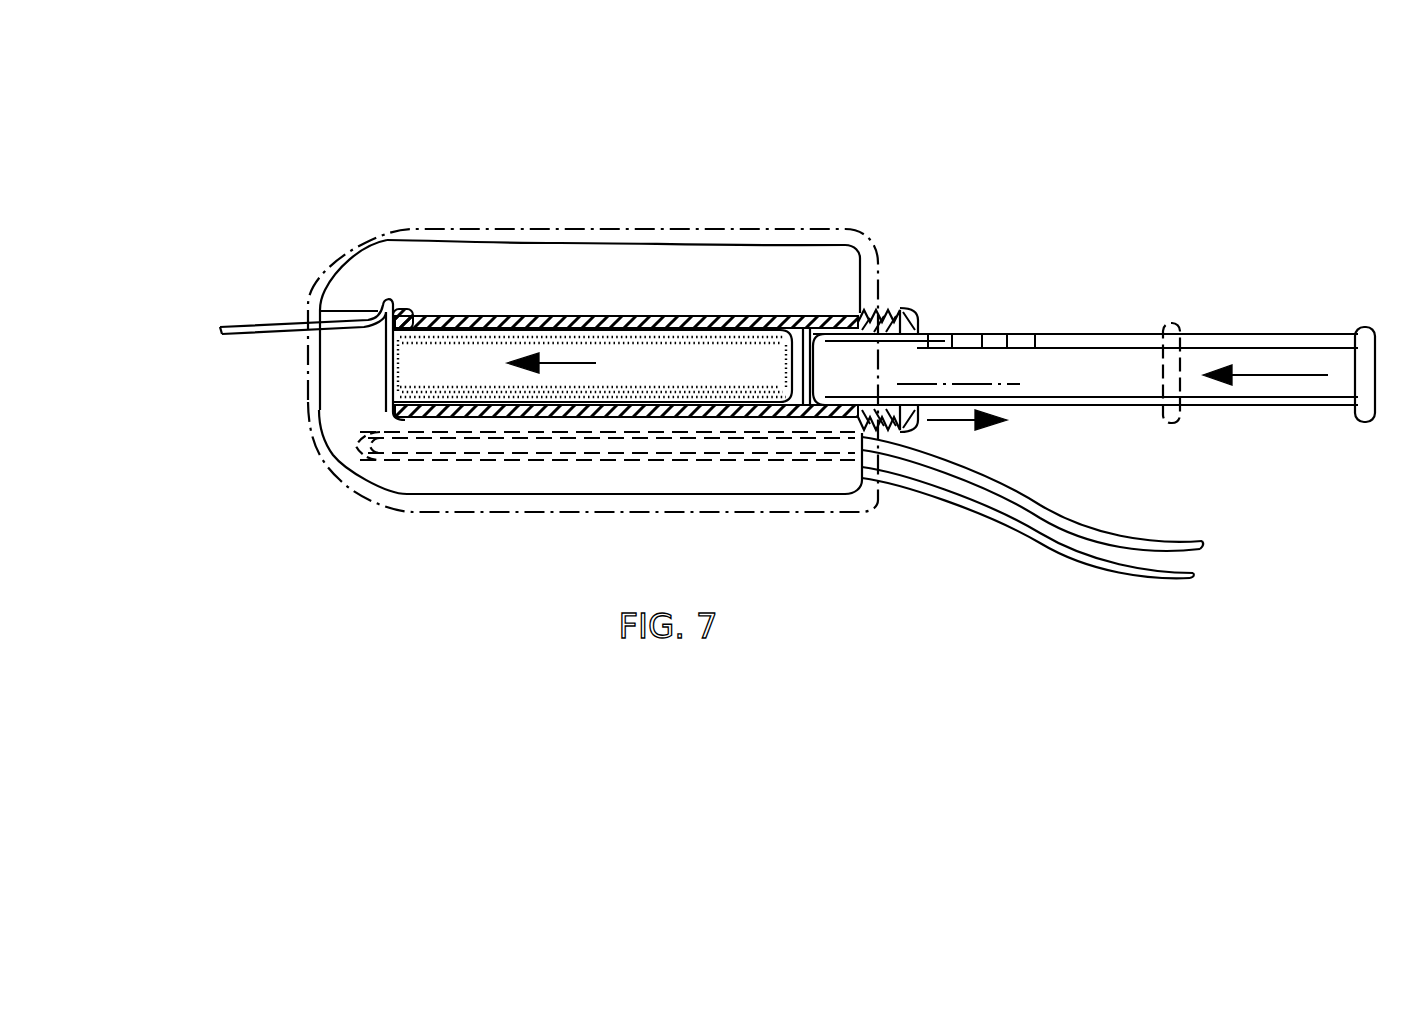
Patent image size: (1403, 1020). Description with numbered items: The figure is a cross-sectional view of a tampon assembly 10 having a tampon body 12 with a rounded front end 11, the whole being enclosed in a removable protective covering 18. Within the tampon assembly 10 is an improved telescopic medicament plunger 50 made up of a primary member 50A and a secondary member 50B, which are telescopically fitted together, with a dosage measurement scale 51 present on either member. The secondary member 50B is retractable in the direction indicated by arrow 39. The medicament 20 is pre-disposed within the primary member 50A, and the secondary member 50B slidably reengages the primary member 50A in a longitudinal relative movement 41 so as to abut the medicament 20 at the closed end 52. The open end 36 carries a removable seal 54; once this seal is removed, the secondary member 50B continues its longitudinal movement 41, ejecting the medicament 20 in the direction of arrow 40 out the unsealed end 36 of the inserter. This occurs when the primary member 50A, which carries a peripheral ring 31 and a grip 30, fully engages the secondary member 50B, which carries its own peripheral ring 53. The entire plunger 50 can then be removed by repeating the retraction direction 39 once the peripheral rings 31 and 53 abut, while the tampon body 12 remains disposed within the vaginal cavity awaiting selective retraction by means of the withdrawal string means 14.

The tampon assembly 10 is at (641, 229).
The rounded front end 11 is at (366, 256).
The tampon body 12 is at (514, 242).
The withdrawal string means 14 is at (1170, 567).
The removable protective covering 18 is at (846, 233).
The medicament 20 is at (663, 379).
The grip 30 is at (892, 310).
The peripheral ring 31 is at (908, 310).
The open end 36 is at (410, 318).
The retraction direction arrow 39 is at (967, 432).
The medicament ejection arrow 40 is at (559, 360).
The longitudinal relative movement 41 is at (1260, 372).
The telescopic medicament plunger 50 is at (1040, 407).
The primary member 50A is at (691, 320).
The secondary member 50B is at (1095, 398).
The dosage measurement scale 51 is at (1035, 334).
The closed end 52 is at (805, 357).
The peripheral ring 53 is at (1174, 326).
The removable seal 54 is at (288, 316).